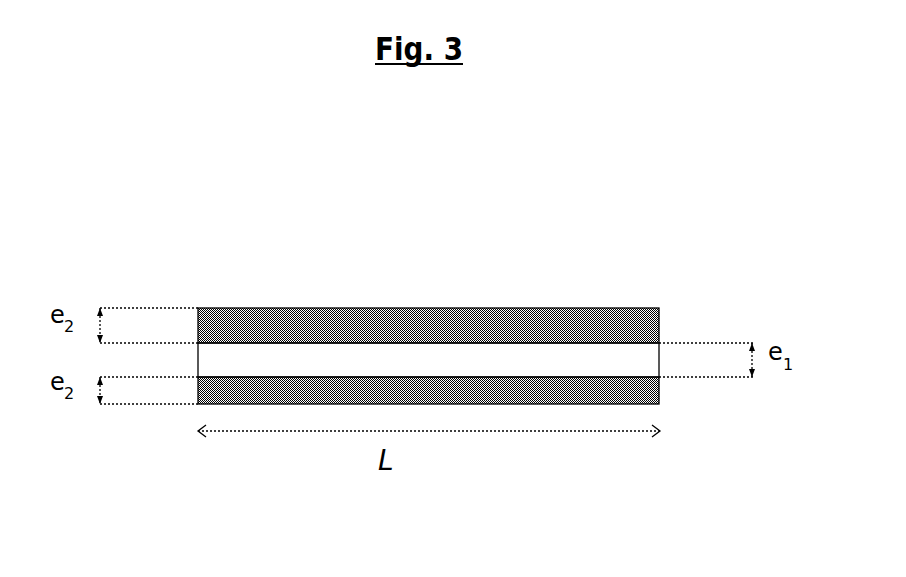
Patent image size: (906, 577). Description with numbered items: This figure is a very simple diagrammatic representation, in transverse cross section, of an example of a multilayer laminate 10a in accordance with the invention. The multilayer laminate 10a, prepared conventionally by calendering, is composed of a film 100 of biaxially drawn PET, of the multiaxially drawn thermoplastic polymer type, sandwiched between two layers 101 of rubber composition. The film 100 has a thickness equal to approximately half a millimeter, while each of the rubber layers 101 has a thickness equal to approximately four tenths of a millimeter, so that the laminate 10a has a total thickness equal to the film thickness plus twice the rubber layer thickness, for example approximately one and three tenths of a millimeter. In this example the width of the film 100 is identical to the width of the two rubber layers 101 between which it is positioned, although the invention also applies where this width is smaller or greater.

The multilayer laminate 10a is at (442, 361).
The film 100 is at (447, 355).
The rubber layers 101 is at (263, 320).